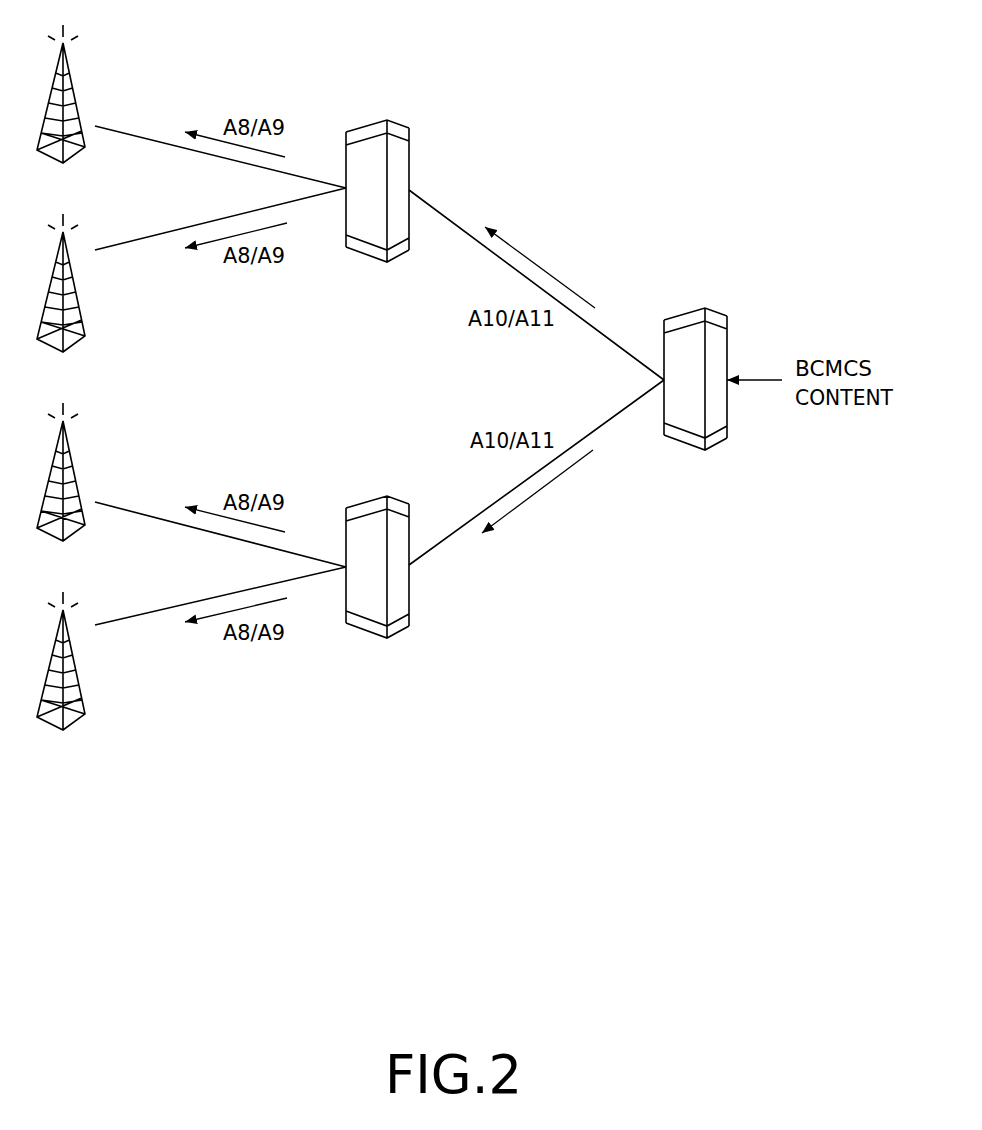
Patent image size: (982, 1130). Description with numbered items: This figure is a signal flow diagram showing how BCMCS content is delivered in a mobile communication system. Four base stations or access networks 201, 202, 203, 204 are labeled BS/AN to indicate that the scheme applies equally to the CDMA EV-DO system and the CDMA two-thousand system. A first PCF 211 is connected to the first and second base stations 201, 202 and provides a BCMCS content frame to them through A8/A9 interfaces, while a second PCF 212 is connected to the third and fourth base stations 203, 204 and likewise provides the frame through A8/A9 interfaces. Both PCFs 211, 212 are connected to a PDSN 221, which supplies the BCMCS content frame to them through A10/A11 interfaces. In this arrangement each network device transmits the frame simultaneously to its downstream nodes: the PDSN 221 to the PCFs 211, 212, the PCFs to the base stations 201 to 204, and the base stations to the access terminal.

The first base station 201 is at (77, 102).
The second base station 202 is at (77, 291).
The third base station 203 is at (77, 480).
The fourth base station 204 is at (77, 669).
The first PCF 211 is at (398, 124).
The second PCF 212 is at (398, 500).
The PDSN 221 is at (716, 312).